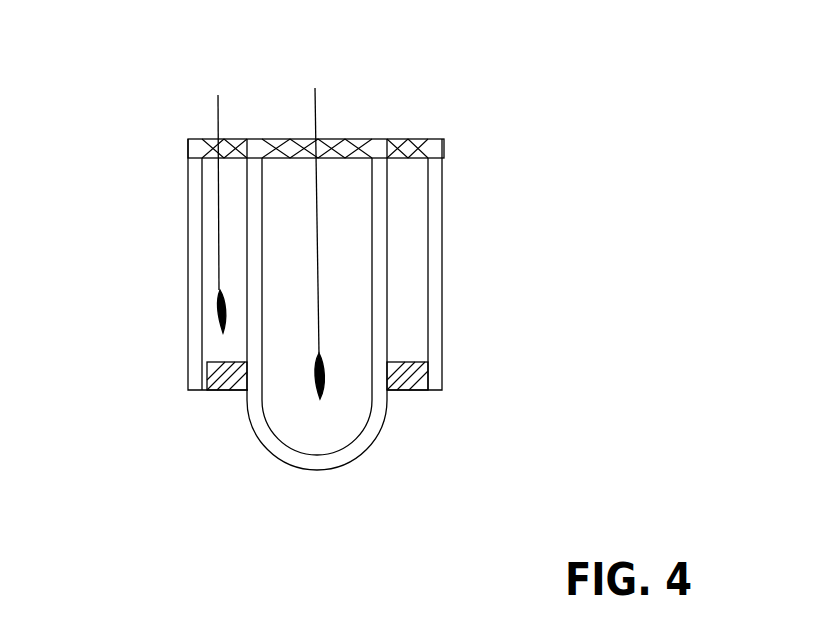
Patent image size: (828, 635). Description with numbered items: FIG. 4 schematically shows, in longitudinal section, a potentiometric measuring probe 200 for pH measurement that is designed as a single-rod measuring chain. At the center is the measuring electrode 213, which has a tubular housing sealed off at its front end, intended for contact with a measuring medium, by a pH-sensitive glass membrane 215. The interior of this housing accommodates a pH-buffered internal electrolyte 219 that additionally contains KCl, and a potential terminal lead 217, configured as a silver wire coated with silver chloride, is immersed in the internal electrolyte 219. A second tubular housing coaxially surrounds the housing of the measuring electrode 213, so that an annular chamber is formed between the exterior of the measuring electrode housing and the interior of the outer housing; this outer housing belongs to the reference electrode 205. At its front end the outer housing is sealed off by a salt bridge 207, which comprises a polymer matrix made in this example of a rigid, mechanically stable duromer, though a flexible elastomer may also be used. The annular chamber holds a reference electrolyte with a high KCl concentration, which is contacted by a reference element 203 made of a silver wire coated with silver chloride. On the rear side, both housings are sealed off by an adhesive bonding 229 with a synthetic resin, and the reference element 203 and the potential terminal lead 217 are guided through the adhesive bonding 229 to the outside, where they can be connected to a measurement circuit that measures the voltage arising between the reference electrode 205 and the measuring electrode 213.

The potentiometric measuring probe 200 is at (569, 155).
The reference element 203 is at (213, 242).
The reference electrode 205 is at (215, 343).
The salt bridge 207 is at (218, 392).
The measuring electrode 213 is at (392, 253).
The pH-sensitive glass membrane 215 is at (365, 442).
The potential terminal lead 217 is at (320, 352).
The internal electrolyte 219 is at (298, 413).
The adhesive bonding 229 is at (271, 137).